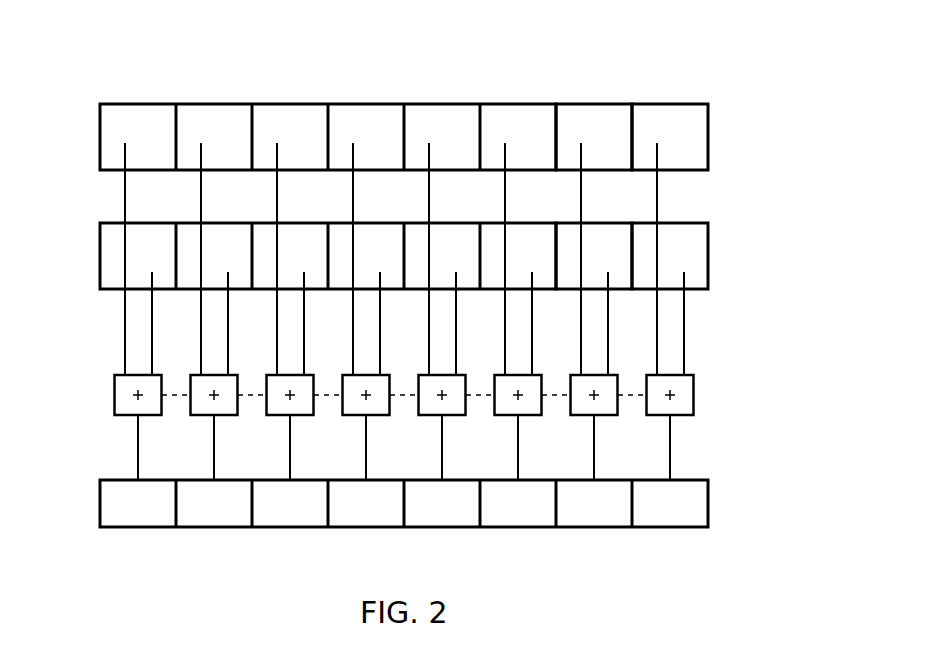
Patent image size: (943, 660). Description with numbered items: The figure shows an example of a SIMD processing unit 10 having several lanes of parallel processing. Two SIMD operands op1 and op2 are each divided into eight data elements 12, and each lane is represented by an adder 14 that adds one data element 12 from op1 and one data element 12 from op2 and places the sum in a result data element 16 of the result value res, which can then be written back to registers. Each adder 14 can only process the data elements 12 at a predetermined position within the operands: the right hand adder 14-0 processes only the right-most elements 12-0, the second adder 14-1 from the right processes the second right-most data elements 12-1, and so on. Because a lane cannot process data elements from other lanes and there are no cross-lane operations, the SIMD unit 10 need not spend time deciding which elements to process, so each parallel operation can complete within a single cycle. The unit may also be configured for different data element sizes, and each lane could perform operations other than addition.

The SIMD processing unit 10 is at (749, 353).
The data element 12 is at (518, 232).
The second right-most data element 12-1 is at (594, 232).
The right-most data element 12-0 is at (670, 232).
The adder 14 is at (485, 438).
The second adder from the right 14-1 is at (578, 418).
The right hand adder 14-0 is at (654, 418).
The result data element 16 is at (652, 543).